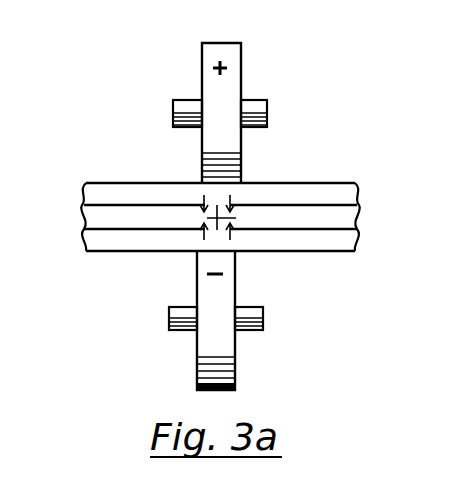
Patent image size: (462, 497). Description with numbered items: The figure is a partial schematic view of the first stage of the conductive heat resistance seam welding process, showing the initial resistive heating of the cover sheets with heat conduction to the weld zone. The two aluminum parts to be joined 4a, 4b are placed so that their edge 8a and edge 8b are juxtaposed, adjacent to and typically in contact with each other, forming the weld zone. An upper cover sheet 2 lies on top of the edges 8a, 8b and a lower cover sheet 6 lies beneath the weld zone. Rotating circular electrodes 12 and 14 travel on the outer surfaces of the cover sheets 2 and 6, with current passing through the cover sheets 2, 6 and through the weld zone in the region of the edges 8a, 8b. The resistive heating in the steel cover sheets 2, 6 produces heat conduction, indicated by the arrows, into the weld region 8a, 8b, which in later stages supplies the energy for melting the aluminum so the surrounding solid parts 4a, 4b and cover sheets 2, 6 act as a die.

The upper cover sheet 2 is at (315, 186).
The part to be joined 4a is at (84, 213).
The part to be joined 4b is at (352, 218).
The lower cover sheet 6 is at (330, 247).
The edge 8a is at (215, 218).
The edge 8b is at (222, 220).
The rotating circular electrode 12 is at (245, 56).
The rotating circular electrode 14 is at (228, 347).